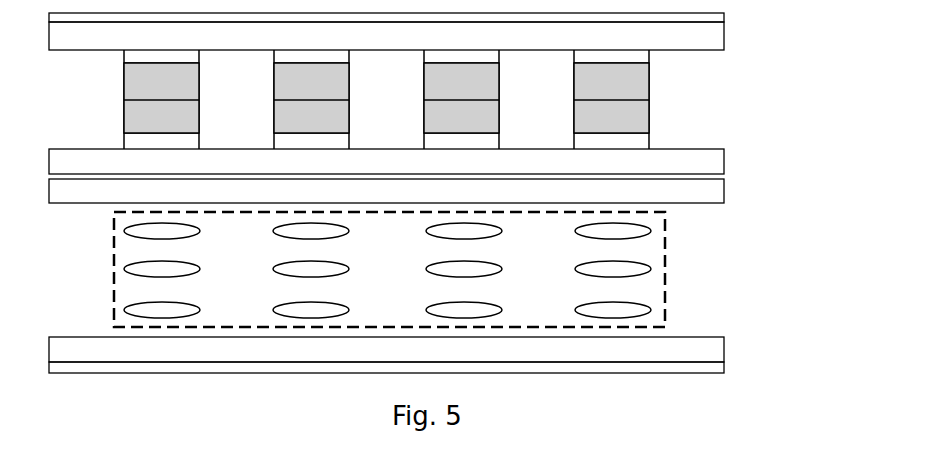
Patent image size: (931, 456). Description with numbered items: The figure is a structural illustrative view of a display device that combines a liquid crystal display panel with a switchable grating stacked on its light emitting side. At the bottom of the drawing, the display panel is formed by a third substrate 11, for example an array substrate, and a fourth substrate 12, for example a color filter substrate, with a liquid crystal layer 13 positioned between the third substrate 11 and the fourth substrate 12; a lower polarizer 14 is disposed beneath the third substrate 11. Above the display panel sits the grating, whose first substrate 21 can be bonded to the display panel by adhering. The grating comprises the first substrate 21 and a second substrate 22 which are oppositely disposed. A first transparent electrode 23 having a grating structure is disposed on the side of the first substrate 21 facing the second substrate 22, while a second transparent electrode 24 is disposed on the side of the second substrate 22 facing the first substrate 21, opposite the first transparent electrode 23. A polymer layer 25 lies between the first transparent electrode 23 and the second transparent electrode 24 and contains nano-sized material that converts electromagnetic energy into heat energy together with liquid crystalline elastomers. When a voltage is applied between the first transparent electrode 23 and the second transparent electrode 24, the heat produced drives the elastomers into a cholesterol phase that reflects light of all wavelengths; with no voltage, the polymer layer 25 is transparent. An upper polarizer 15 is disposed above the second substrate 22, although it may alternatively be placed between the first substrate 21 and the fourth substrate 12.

The upper polarizer 15 is at (724, 16).
The second substrate 22 is at (724, 34).
The second transparent electrode 24 is at (645, 52).
The polymer layer 25 is at (124, 78).
The first transparent electrode 23 is at (641, 146).
The first substrate 21 is at (724, 164).
The fourth substrate 12 is at (724, 192).
The liquid crystal layer 13 is at (665, 266).
The third substrate 11 is at (724, 353).
The lower polarizer 14 is at (724, 371).